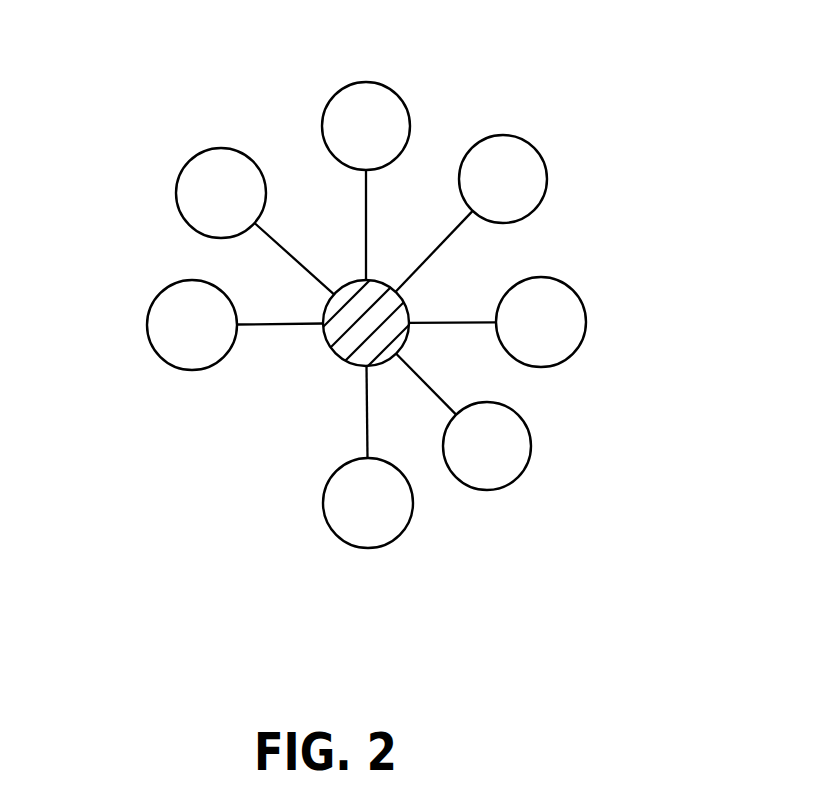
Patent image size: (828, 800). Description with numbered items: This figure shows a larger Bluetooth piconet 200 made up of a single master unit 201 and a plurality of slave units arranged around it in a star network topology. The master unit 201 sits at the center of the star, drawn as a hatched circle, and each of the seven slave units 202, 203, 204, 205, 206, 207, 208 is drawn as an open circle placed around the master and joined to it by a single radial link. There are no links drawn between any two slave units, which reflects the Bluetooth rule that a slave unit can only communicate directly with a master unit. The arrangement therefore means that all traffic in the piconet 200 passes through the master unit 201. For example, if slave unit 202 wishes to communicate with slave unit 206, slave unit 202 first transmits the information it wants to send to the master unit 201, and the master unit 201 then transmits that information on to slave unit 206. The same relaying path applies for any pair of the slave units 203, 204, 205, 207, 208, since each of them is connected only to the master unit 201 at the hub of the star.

The piconet 200 is at (146, 84).
The master unit 201 is at (337, 356).
The slave unit 202 is at (546, 162).
The slave unit 203 is at (343, 91).
The slave unit 204 is at (176, 193).
The slave unit 205 is at (160, 357).
The slave unit 206 is at (338, 534).
The slave unit 207 is at (532, 447).
The slave unit 208 is at (586, 320).